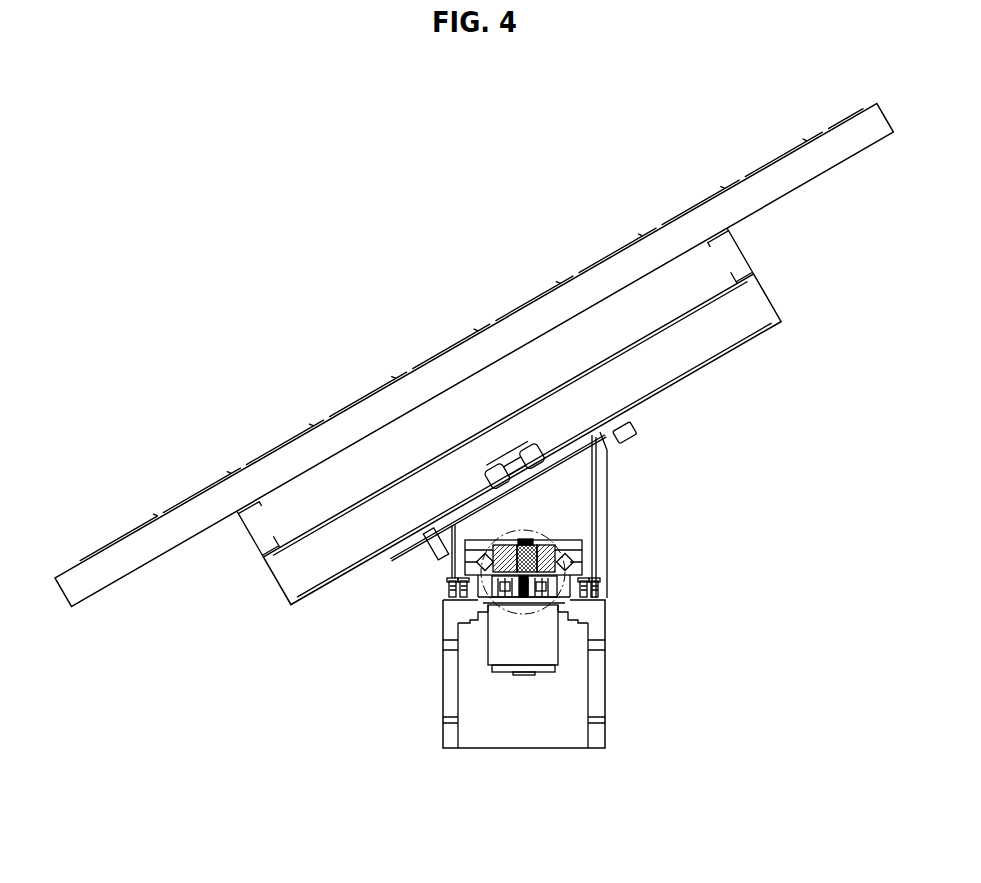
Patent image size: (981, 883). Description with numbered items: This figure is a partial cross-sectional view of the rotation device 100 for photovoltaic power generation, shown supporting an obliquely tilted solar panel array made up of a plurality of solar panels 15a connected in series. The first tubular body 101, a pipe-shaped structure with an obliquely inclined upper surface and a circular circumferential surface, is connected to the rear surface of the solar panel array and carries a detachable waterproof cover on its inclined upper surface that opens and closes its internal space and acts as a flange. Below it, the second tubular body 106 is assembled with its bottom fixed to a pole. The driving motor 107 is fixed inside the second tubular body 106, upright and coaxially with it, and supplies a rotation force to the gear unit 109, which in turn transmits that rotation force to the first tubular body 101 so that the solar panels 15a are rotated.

The solar panel 15a is at (777, 159).
The rotation device for photovoltaic power generation 100 is at (668, 567).
The first tubular body 101 is at (607, 497).
The second tubular body 106 is at (605, 690).
The driving motor 107 is at (487, 642).
The gear unit 109 is at (453, 573).